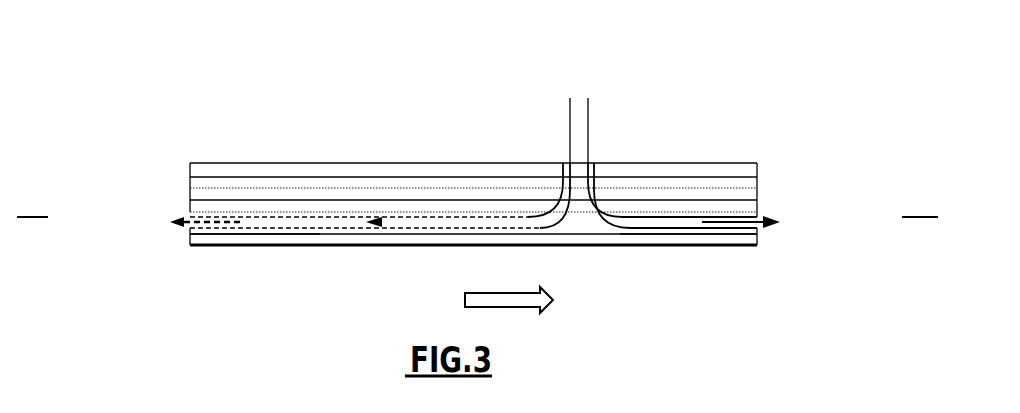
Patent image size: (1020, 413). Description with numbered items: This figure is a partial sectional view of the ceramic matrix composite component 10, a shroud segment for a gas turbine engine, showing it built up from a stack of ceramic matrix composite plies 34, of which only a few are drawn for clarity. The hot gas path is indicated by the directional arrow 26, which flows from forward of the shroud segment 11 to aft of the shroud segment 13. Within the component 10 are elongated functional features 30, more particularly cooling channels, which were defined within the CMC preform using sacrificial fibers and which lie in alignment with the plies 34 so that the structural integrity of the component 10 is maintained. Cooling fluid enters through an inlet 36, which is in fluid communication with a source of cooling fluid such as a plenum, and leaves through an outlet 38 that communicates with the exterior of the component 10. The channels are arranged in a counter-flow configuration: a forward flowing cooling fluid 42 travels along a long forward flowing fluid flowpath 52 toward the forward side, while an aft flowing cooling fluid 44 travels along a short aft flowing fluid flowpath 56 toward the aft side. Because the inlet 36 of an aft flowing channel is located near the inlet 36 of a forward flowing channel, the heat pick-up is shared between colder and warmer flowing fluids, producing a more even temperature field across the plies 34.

The component 10 is at (740, 76).
The forward of the shroud segment 11 is at (32, 205).
The aft of the shroud segment 13 is at (920, 205).
The directional arrow 26 is at (503, 292).
The elongated functional features 30 is at (315, 229).
The ceramic matrix composite (CMC) plies 34 is at (190, 180).
The inlet 36 is at (558, 150).
The outlet 38 is at (170, 210).
The forward flowing cooling fluid 42 is at (570, 106).
The aft flowing cooling fluid 44 is at (588, 106).
The long forward flowing fluid flowpath 52 is at (253, 229).
The short aft flowing fluid flowpath 56 is at (655, 228).